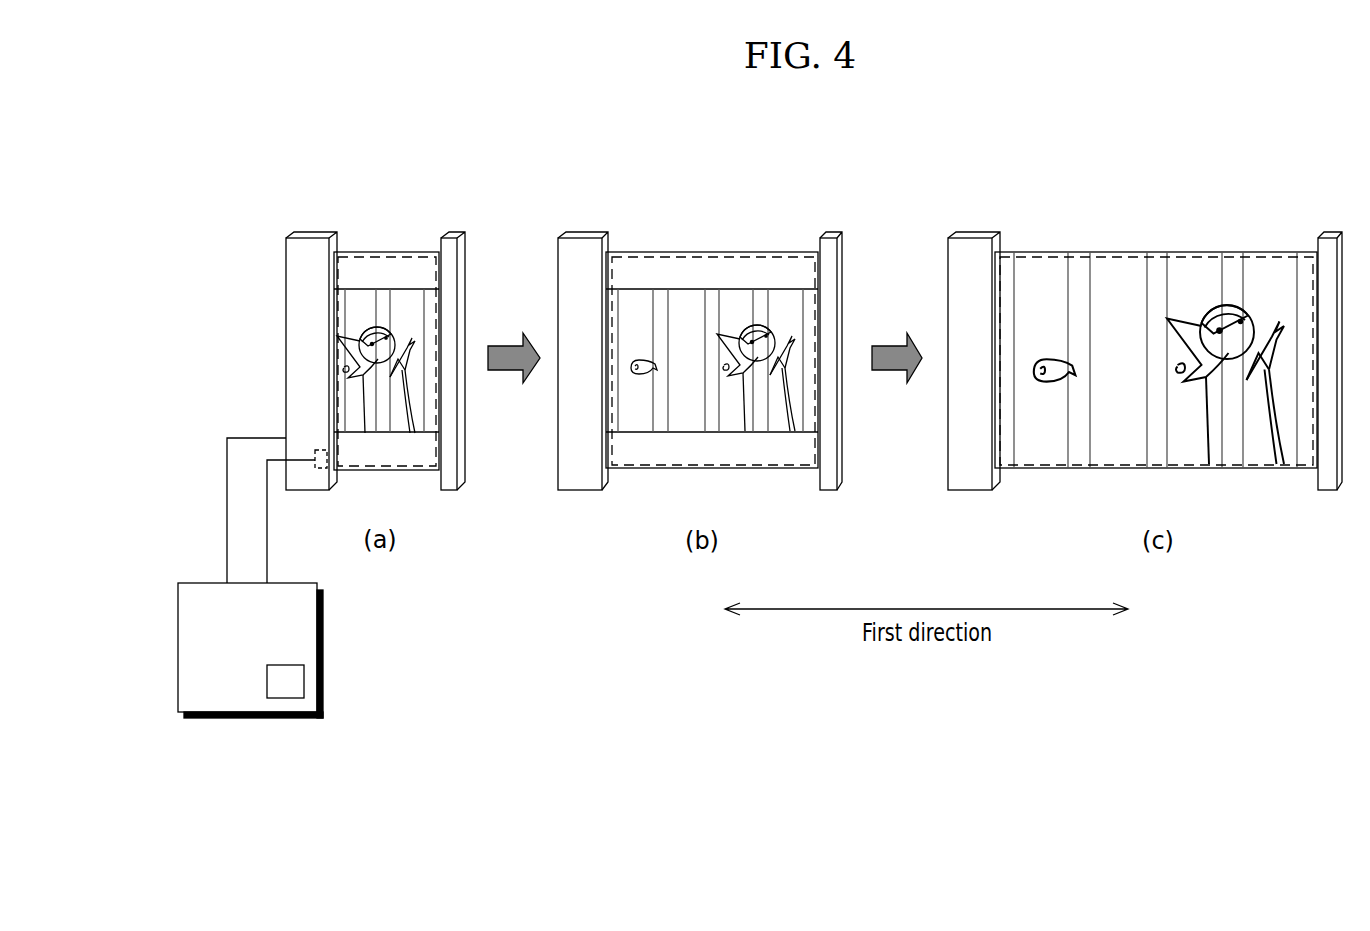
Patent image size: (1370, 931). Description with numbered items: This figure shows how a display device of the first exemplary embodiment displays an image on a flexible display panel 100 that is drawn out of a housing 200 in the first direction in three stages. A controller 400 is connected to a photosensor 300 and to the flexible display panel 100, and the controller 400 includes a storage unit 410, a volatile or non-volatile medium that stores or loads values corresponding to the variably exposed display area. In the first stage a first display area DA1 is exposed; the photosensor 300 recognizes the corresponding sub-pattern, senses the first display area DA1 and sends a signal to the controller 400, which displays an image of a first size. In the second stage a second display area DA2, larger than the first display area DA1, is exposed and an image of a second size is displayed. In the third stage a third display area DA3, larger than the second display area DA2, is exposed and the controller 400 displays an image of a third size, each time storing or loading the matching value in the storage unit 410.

The flexible display panel 100 is at (353, 252).
The housing 200 is at (300, 315).
The photosensor 300 is at (317, 470).
The controller 400 is at (323, 632).
The storage unit 410 is at (288, 698).
The first display area DA1 is at (404, 256).
The second display area DA2 is at (703, 256).
The third display area DA3 is at (1184, 256).